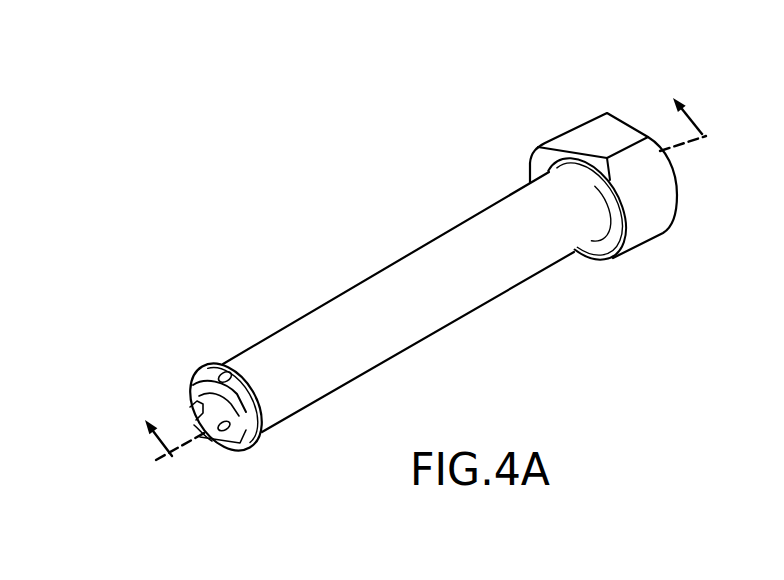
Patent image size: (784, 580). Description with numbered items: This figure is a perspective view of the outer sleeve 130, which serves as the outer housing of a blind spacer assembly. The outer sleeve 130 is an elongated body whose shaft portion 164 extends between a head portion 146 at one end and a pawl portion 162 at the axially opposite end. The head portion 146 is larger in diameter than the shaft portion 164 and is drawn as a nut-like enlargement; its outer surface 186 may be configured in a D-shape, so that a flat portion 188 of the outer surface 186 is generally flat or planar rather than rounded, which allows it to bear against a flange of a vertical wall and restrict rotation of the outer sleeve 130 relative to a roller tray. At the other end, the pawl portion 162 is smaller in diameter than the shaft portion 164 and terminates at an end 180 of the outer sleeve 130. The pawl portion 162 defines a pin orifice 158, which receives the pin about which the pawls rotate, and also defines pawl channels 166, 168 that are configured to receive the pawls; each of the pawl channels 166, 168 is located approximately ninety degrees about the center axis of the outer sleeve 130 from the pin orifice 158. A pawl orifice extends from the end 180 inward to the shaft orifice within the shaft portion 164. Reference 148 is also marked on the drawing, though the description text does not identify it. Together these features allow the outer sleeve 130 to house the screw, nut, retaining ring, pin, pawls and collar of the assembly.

The outer sleeve 130 is at (238, 183).
The shaft portion 164 is at (524, 157).
The outer surface 186 is at (665, 207).
The flat portion 188 is at (593, 133).
The nut end / coupling 148 is at (678, 183).
The head portion 146 is at (680, 229).
The pawl channel 166 is at (262, 430).
The pin orifice 158 is at (225, 362).
The pawl channel 168 is at (182, 386).
The end 180 is at (210, 437).
The pawl portion 162 is at (260, 445).